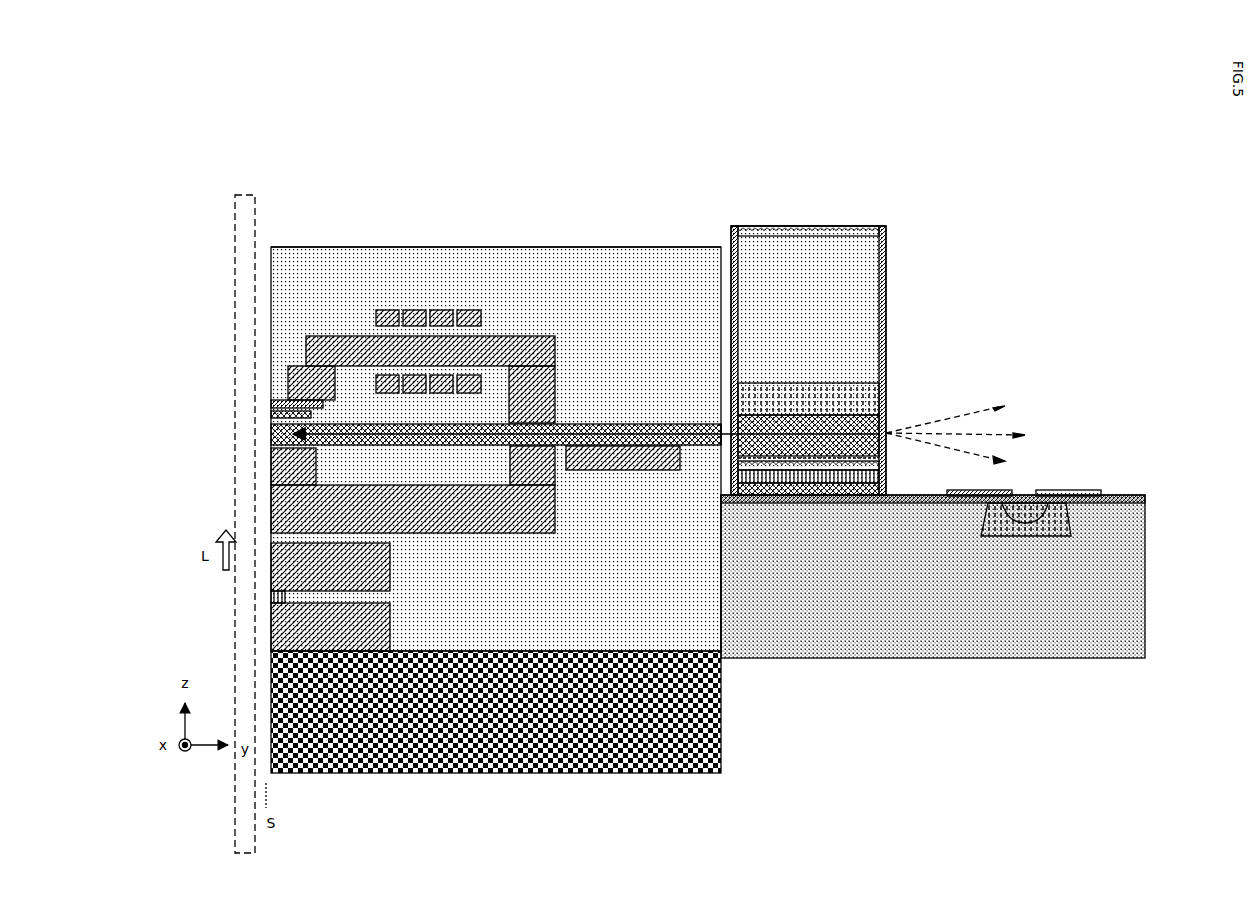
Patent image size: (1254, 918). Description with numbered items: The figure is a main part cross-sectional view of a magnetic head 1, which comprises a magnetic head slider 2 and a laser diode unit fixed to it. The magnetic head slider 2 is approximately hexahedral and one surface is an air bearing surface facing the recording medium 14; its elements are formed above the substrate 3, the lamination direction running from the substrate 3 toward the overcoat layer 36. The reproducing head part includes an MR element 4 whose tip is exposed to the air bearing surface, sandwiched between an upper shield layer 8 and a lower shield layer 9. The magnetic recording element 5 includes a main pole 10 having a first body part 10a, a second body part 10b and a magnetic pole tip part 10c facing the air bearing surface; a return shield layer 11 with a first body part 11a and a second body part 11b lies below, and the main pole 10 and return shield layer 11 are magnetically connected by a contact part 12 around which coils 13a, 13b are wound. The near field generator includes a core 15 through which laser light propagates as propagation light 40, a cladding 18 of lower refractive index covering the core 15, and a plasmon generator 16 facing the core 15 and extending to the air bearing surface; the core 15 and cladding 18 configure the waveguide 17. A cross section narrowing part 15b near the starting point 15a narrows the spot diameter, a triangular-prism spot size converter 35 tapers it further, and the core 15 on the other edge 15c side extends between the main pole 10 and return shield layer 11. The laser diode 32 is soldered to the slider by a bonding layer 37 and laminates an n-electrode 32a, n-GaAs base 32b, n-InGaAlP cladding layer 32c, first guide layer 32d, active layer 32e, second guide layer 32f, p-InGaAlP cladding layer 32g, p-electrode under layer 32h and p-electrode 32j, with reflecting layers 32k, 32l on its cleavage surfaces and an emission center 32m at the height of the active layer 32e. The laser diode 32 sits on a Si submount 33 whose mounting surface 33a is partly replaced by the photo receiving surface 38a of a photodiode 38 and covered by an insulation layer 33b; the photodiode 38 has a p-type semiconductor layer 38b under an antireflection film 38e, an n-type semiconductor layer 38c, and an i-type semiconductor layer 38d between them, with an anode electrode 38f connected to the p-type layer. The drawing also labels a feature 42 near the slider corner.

The magnetic head 1 is at (584, 116).
The magnetic head slider 2 is at (488, 236).
The substrate 3 is at (712, 690).
The MR element 4 is at (263, 590).
The magnetic recording element 5 is at (205, 426).
The upper shield layer 8 is at (382, 562).
The lower shield layer 9 is at (382, 620).
The main pole 10 is at (351, 357).
The first body part 10a is at (298, 335).
The second body part 10b is at (280, 372).
The magnetic pole tip part 10c is at (263, 396).
The return shield layer 11 is at (351, 490).
The first body part 11a is at (263, 490).
The second body part 11b is at (263, 455).
The contact part 12 is at (530, 395).
The coil 13a is at (380, 302).
The coil 13b is at (375, 367).
The recording medium 14 is at (238, 245).
The core 15 is at (580, 415).
The starting point 15a is at (690, 445).
The cross section narrowing part 15b is at (655, 412).
The other edge 15c is at (345, 415).
The plasmon generator 16 is at (263, 406).
The waveguide 17 is at (608, 396).
The cladding 18 is at (409, 405).
The laser diode 32 is at (839, 359).
The n-electrode 32a is at (878, 222).
The n-GaAs base 32b is at (867, 290).
The n-InGaAlP cladding layer 32c is at (870, 385).
The first InGaAlP guide layer 32d is at (868, 410).
The active layer 32e is at (875, 448).
The second InGaAlP guide layer 32f is at (871, 457).
The p-InGaAlP cladding layer 32g is at (868, 468).
The p-electrode under layer 32h is at (878, 480).
The p-electrode 32j is at (878, 484).
The reflecting layer 32k is at (723, 220).
The reflecting layer 32l is at (878, 262).
The emission center 32m is at (713, 412).
The submount 33 is at (976, 558).
The mounting surface 33a is at (1105, 490).
The insulation layer 33b is at (1137, 492).
The spot size converter 35 is at (578, 462).
The overcoat layer 36 is at (440, 240).
The bonding layer 37 is at (713, 600).
The photodiode 38 is at (1036, 501).
The photo receiving surface 38a is at (1000, 487).
The p-type semiconductor layer 38b is at (1035, 505).
The n-type semiconductor layer 38c is at (1108, 552).
The i-type semiconductor layer 38d is at (1030, 522).
The antireflection film 38e is at (1015, 487).
The anode electrode 38f is at (1085, 487).
The propagation light 40 is at (368, 432).
The corner portion 42 is at (712, 494).